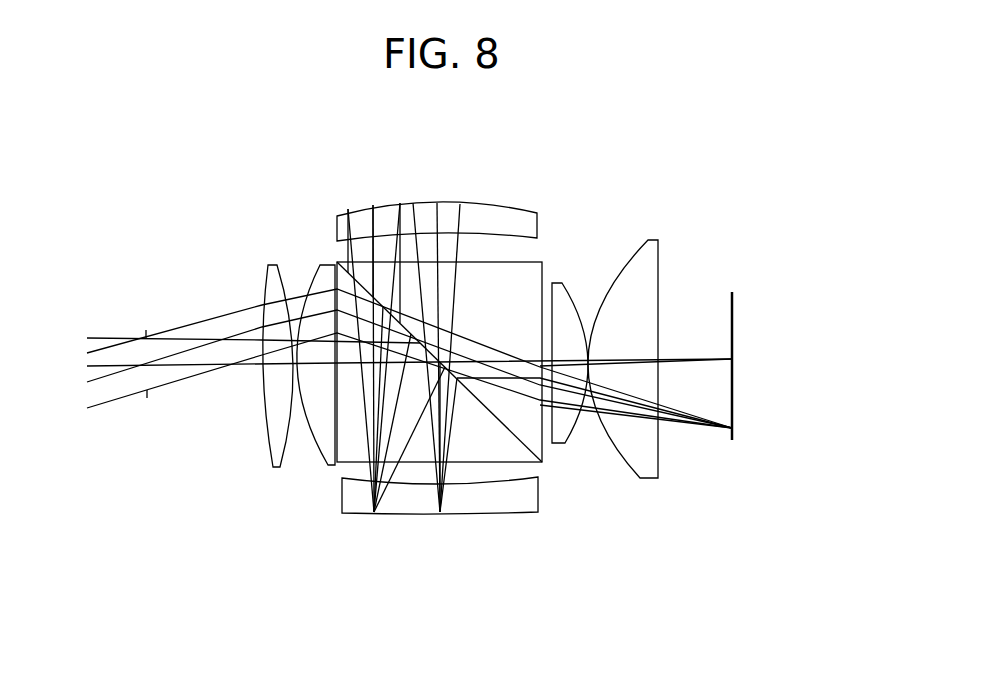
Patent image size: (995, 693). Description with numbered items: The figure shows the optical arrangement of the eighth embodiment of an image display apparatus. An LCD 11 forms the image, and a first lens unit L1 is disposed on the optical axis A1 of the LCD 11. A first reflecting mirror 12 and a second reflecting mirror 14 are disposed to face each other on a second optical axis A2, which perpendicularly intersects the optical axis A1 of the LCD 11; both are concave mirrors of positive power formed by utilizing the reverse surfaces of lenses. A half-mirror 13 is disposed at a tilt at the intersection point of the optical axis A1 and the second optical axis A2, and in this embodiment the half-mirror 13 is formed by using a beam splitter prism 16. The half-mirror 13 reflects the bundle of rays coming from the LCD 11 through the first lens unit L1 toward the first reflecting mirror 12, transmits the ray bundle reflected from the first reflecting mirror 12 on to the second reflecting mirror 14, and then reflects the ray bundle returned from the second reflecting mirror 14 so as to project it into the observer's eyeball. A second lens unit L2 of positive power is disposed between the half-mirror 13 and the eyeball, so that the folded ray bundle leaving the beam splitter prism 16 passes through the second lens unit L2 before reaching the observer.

The LCD 11 is at (736, 293).
The first reflecting mirror 12 is at (513, 200).
The half-mirror 13 is at (518, 447).
The second reflecting mirror 14 is at (354, 513).
The beam splitter prism 16 is at (520, 280).
The optical axis of the LCD A1 is at (680, 355).
The second optical axis A2 is at (436, 445).
The first lens unit L1 is at (667, 480).
The second lens unit L2 is at (338, 472).